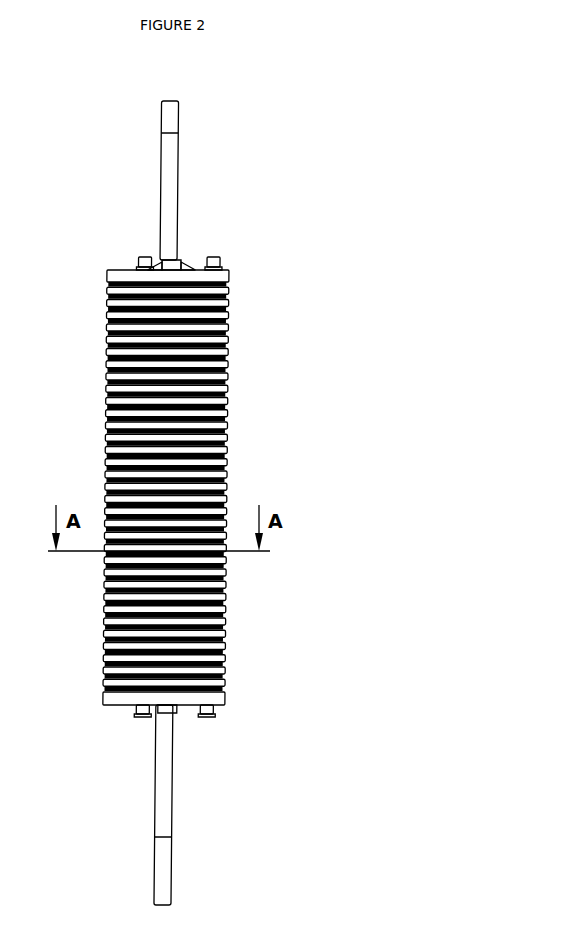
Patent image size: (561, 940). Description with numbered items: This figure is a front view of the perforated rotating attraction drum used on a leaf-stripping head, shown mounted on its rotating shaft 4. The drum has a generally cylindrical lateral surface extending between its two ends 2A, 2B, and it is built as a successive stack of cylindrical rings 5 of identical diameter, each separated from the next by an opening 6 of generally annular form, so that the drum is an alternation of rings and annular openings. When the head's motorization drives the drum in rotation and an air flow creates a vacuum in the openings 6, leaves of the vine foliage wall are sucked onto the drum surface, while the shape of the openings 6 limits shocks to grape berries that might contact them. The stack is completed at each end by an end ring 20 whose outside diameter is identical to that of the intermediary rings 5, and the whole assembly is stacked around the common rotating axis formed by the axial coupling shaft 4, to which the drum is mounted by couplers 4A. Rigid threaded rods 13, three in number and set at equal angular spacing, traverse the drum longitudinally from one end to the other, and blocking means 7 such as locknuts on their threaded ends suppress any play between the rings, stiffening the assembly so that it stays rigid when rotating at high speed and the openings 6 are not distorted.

The shaft 4 is at (172, 150).
The couplers 4A is at (184, 262).
The end 2A is at (130, 219).
The end 2B is at (202, 751).
The cylindrical rings 5 is at (227, 298).
The annular openings 6 is at (243, 320).
The blocking means 7 is at (229, 255).
The rigid rods 13 is at (221, 250).
The end ring 20 is at (118, 273).